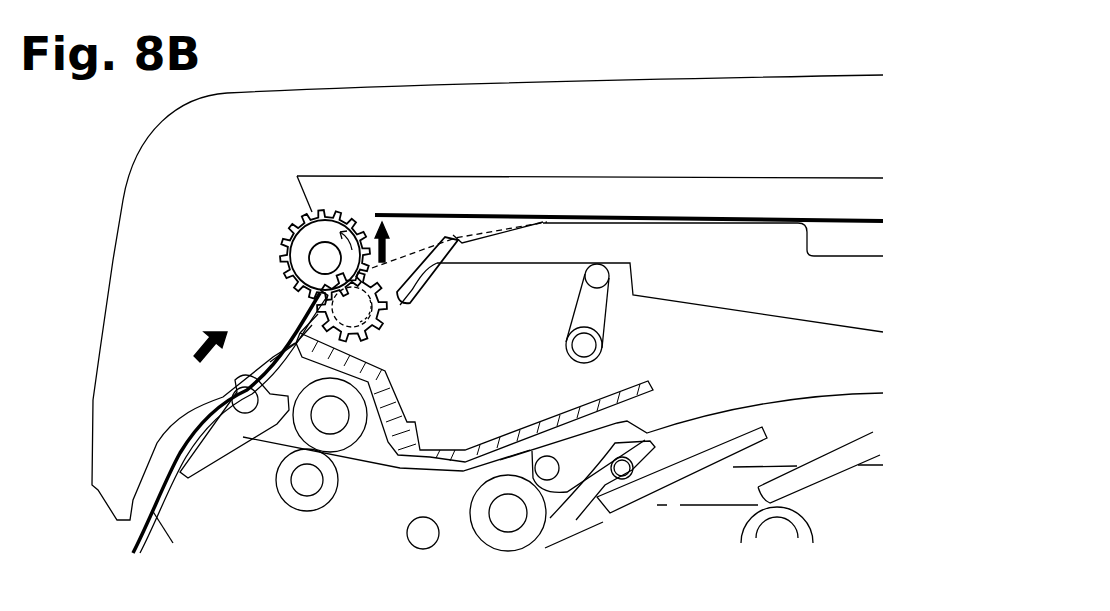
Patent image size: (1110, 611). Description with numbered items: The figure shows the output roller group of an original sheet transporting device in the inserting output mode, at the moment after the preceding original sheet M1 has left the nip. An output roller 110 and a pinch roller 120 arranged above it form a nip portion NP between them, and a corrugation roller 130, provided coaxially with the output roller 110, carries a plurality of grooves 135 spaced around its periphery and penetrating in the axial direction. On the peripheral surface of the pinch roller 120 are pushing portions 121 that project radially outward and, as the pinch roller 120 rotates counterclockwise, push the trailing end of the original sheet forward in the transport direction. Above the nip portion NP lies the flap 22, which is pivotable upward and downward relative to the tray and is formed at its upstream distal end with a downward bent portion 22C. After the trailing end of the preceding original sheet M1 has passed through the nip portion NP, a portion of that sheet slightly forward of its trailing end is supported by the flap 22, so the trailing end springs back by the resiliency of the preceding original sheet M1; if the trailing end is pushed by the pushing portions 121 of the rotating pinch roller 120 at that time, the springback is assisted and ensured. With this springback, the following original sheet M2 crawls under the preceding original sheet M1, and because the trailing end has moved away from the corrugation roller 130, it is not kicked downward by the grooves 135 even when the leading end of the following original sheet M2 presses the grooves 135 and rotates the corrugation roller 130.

The flap 22 is at (822, 250).
The bent portion 22C is at (453, 235).
The preceding original sheet M1 is at (642, 214).
The following original sheet M2 is at (157, 440).
The output roller 110 is at (315, 326).
The pinch roller 120 is at (350, 208).
The pushing portion 121 is at (297, 230).
The corrugation roller 130 is at (425, 295).
The groove 135 is at (388, 308).
The nip portion NP is at (330, 262).